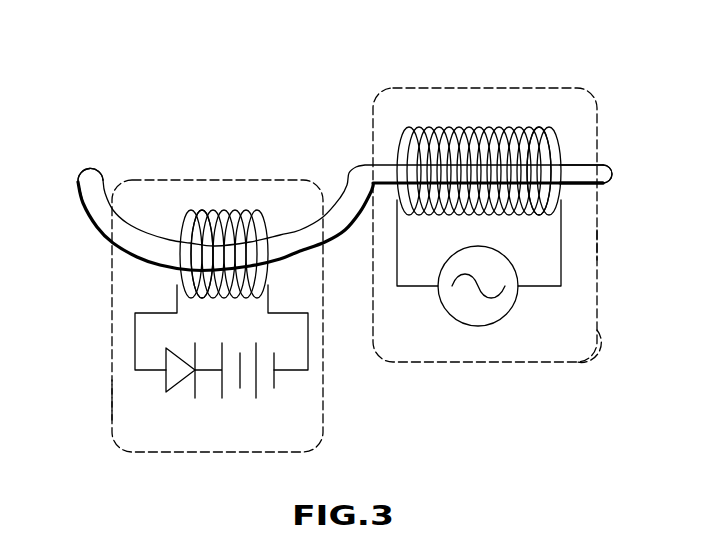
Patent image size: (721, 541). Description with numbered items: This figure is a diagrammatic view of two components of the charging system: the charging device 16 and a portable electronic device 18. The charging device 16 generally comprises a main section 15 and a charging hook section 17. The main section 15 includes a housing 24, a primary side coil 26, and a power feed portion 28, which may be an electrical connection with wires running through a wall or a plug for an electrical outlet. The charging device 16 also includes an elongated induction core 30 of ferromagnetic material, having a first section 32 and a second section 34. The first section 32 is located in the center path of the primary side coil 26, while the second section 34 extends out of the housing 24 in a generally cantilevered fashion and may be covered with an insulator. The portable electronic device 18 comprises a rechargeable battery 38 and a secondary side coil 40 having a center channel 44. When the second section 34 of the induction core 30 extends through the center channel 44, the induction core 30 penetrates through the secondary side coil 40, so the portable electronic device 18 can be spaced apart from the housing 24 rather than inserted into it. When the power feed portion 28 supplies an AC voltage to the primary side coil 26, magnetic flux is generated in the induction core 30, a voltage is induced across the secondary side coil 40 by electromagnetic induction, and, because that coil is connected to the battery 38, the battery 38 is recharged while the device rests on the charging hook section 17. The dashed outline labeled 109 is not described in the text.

The main section 15 is at (588, 357).
The charging device 16 is at (417, 86).
The charging hook section 17 is at (105, 175).
The portable electronic device 18 is at (156, 459).
The housing 24 is at (597, 243).
The primary side coil 26 is at (487, 128).
The power feed portion 28 is at (492, 322).
The induction core 30 is at (612, 172).
The first section 32 is at (540, 168).
The second section 34 is at (85, 188).
The battery 38 is at (279, 399).
The secondary side coil 40 is at (218, 212).
The center channel 44 is at (200, 273).
The housing of portable device 109 is at (112, 400).